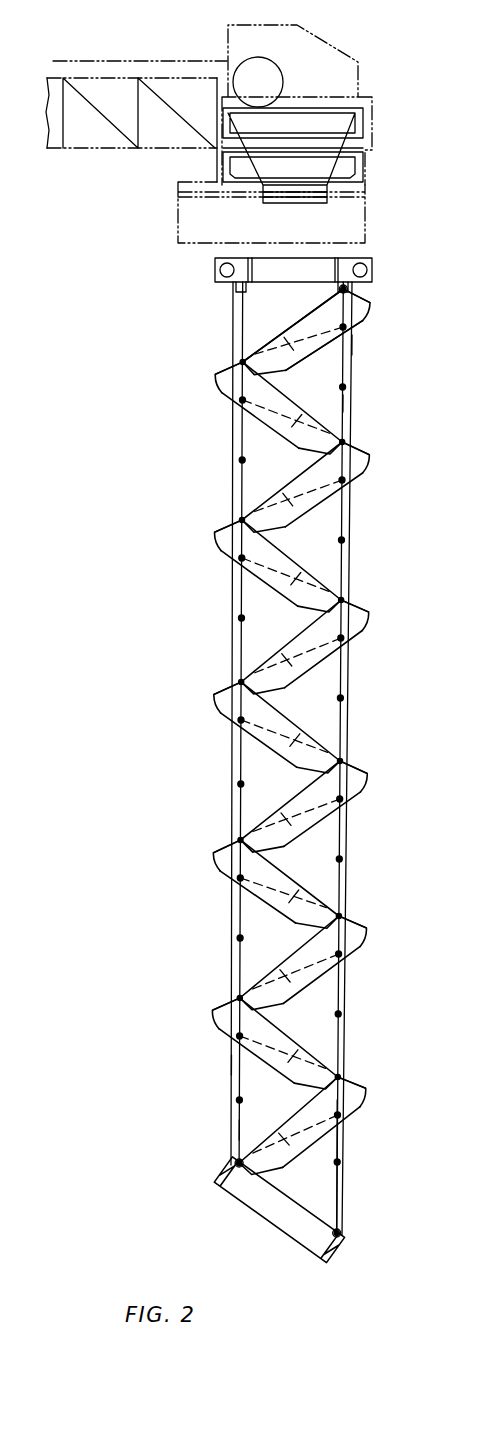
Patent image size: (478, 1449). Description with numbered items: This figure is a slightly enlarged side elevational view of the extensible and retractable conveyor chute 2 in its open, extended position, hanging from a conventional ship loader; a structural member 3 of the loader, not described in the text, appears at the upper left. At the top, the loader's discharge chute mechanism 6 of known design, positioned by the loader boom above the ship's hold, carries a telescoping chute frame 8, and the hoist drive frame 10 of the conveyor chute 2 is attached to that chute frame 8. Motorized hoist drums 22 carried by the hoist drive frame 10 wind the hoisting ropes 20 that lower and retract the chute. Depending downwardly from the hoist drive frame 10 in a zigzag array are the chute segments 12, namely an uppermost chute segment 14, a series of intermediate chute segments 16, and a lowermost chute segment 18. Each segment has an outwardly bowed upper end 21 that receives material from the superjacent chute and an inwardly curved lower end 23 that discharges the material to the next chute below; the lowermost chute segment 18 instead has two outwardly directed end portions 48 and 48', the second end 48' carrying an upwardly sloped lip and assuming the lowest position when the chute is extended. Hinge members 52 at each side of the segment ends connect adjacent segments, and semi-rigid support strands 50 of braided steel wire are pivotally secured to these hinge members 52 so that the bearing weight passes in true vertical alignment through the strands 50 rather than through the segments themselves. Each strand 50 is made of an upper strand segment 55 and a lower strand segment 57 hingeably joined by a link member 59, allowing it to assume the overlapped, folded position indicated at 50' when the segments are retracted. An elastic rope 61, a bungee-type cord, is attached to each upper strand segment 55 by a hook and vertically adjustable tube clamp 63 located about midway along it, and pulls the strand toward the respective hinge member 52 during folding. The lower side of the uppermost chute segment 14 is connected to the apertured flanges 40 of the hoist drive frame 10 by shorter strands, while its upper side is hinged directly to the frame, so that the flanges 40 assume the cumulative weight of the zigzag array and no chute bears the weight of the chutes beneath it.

The extensible and retractable chute 2 is at (426, 338).
The boom 3 is at (100, 62).
The discharge chute mechanism 6 is at (333, 47).
The telescoping chute frame 8 is at (363, 222).
The hoist drive frame 10 is at (365, 258).
The chute segments 12 is at (292, 776).
The uppermost chute segment 14 is at (362, 322).
The intermediate chute segments 16 is at (222, 403).
The lowermost chute segment 18 is at (337, 1212).
The hoisting ropes 20 is at (236, 453).
The upper end 21 is at (198, 697).
The hoist drums 22 is at (219, 270).
The lower end 23 is at (237, 655).
The apertured flanges 40 is at (338, 290).
The end portion 48 is at (197, 1172).
The second end 48' is at (377, 1246).
The semi-rigid support strands 50 is at (295, 758).
The folded support strand 50' is at (383, 1167).
The hinge members 52 is at (241, 362).
The upper strand segment 55 is at (352, 345).
The lower strand segment 57 is at (349, 403).
The link member 59 is at (240, 618).
The elastic rope 61 is at (287, 498).
The tube clamp 63 is at (225, 563).